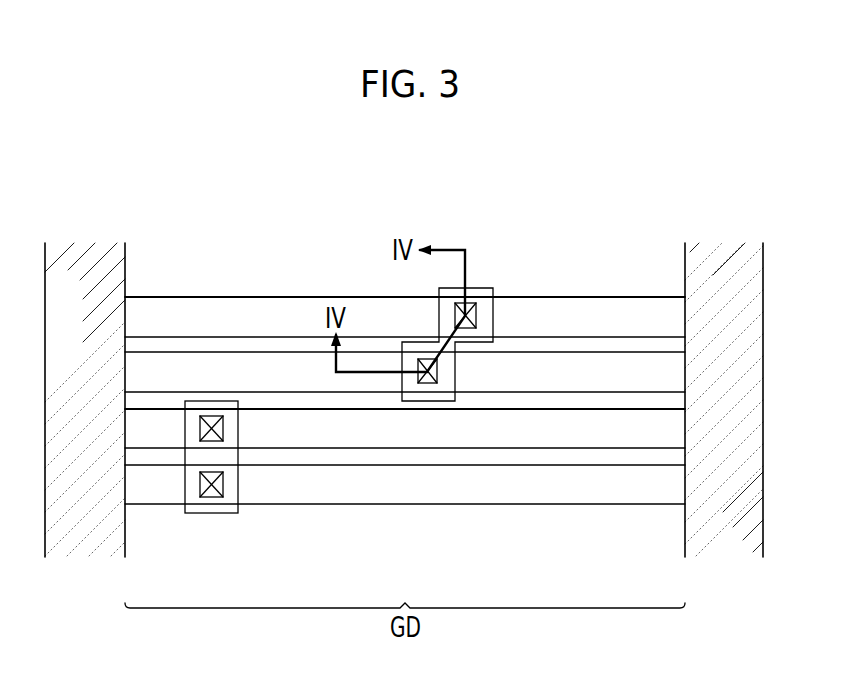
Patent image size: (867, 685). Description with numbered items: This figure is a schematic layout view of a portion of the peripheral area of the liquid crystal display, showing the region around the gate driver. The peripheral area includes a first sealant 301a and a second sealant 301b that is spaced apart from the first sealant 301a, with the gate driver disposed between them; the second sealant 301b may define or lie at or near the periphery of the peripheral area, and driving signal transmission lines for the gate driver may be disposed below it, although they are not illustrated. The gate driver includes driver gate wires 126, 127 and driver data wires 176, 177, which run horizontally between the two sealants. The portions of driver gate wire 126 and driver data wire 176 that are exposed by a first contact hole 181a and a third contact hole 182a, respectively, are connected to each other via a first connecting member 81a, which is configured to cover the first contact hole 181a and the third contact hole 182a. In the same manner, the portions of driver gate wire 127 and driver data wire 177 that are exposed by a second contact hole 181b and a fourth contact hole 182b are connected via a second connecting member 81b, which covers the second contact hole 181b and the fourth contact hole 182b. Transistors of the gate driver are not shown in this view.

The first sealant 301a is at (724, 257).
The second sealant 301b is at (96, 257).
The driver gate wire 126 is at (657, 315).
The driver gate wire 127 is at (620, 433).
The driver data wire 176 is at (572, 367).
The driver data wire 177 is at (532, 483).
The first connecting member 81a is at (411, 343).
The second connecting member 81b is at (193, 517).
The first contact hole 181a is at (473, 307).
The third contact hole 182a is at (430, 386).
The second contact hole 181b is at (210, 415).
The fourth contact hole 182b is at (216, 499).